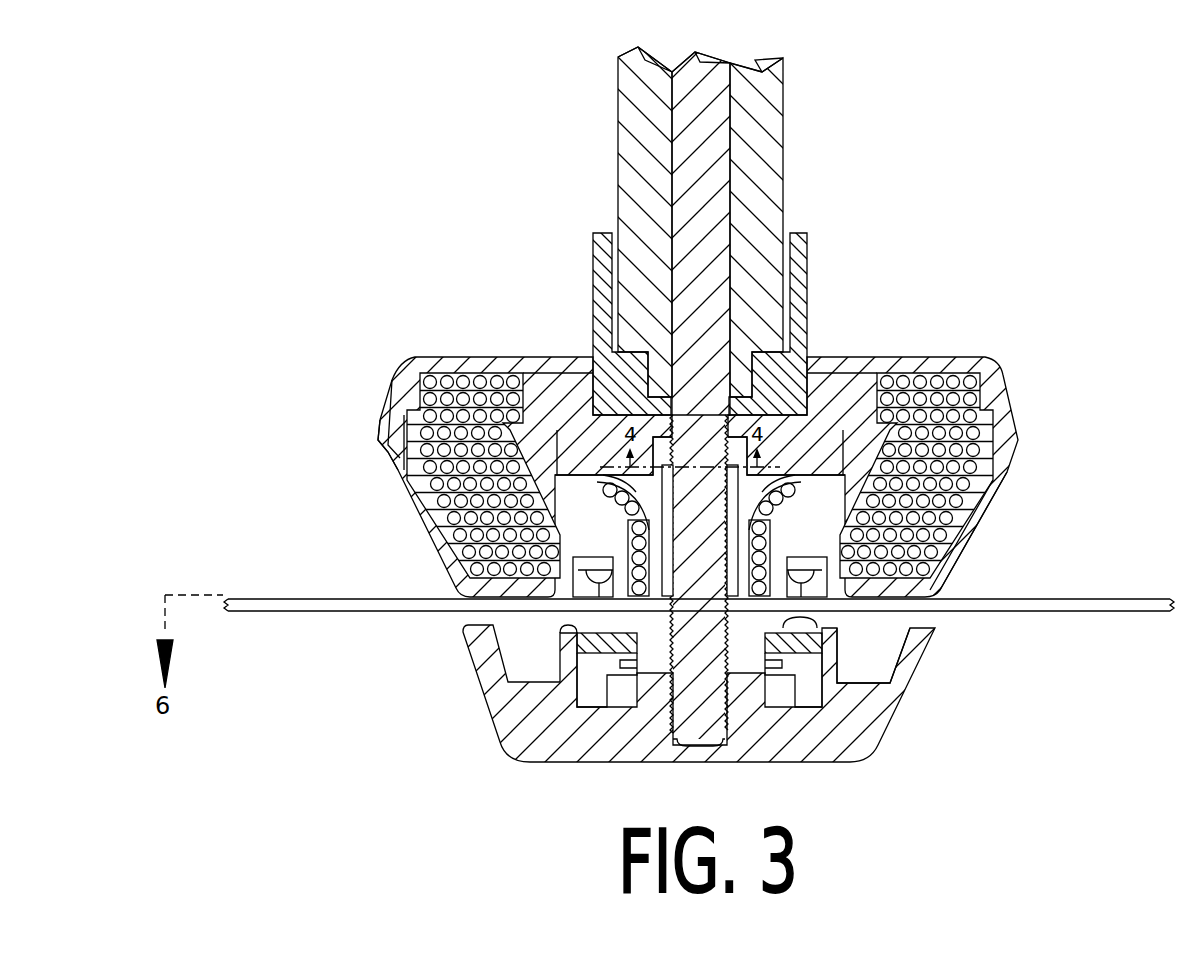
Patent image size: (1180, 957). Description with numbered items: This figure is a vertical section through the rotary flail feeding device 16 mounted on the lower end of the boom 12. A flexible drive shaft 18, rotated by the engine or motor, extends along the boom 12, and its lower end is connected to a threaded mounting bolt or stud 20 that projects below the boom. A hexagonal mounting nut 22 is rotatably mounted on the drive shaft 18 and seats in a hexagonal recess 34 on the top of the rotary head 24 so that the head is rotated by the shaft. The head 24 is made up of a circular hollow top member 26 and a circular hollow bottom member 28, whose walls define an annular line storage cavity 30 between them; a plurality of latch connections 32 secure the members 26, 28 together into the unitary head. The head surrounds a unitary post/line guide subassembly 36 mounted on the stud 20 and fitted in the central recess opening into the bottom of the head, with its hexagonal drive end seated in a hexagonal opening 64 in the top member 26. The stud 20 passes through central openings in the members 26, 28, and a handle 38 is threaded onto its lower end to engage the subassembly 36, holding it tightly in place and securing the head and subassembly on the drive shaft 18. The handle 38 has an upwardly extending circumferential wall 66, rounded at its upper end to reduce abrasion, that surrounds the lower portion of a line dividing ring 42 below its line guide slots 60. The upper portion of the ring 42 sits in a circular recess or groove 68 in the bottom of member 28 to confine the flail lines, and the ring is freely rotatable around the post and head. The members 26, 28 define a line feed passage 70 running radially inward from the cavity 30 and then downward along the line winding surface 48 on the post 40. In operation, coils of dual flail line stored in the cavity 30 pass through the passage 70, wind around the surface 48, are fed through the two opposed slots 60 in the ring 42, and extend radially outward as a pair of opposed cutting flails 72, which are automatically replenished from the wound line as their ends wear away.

The boom 12 is at (786, 112).
The rotary flail feeding device 16 is at (1044, 274).
The flexible drive shaft 18 is at (708, 55).
The threaded mounting bolt or stud 20 is at (708, 747).
The hexagonal mounting nut 22 is at (810, 280).
The rotary head 24 is at (390, 355).
The circular hollow top member 26 is at (988, 360).
The circular hollow bottom member 28 is at (975, 530).
The annular line storage cavity 30 is at (975, 435).
The latch connections 32 is at (398, 452).
The hexagonal recess 34 is at (607, 378).
The post/line guide subassembly 36 is at (642, 682).
The handle 38 is at (910, 703).
The post 40 is at (762, 680).
The line dividing ring 42 is at (807, 657).
The line winding surface 48 is at (647, 520).
The line guide slots 60 is at (815, 585).
The hexagonal opening 64 is at (647, 467).
The circumferential wall 66 is at (840, 648).
The circular recess or groove 68 is at (598, 533).
The line feed passage 70 is at (825, 465).
The cutting flails 72 is at (310, 612).